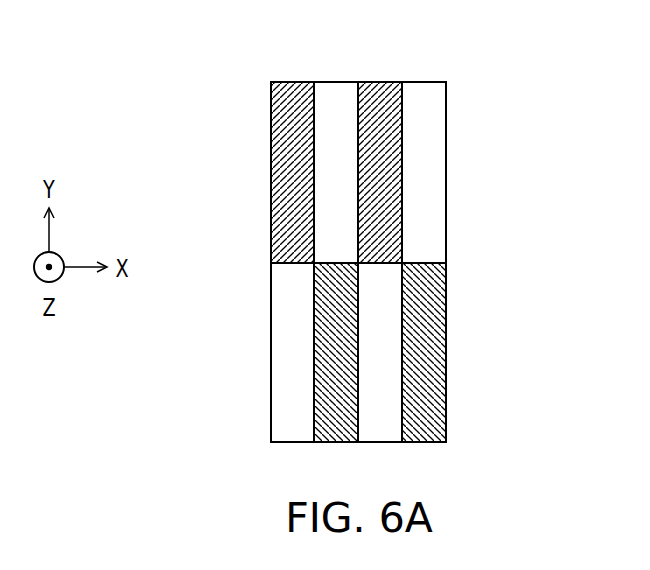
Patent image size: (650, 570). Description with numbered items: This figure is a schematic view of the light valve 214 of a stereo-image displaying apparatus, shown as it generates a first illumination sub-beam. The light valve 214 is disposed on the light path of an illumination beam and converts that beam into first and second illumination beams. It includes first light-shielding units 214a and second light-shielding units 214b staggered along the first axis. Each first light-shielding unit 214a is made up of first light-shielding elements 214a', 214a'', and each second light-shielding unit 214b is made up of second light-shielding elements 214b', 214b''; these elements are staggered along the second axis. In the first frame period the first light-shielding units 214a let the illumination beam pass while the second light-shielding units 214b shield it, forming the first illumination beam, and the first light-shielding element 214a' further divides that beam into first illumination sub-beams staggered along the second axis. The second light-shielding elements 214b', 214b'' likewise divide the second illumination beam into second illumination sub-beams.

The light valve 214 is at (526, 464).
The first light-shielding unit 214a is at (255, 241).
The first light-shielding element 214a' is at (255, 172).
The first light-shielding element 214a'' is at (254, 352).
The second light-shielding unit 214b is at (462, 241).
The second light-shielding element 214b' is at (462, 172).
The second light-shielding element 214b'' is at (464, 352).